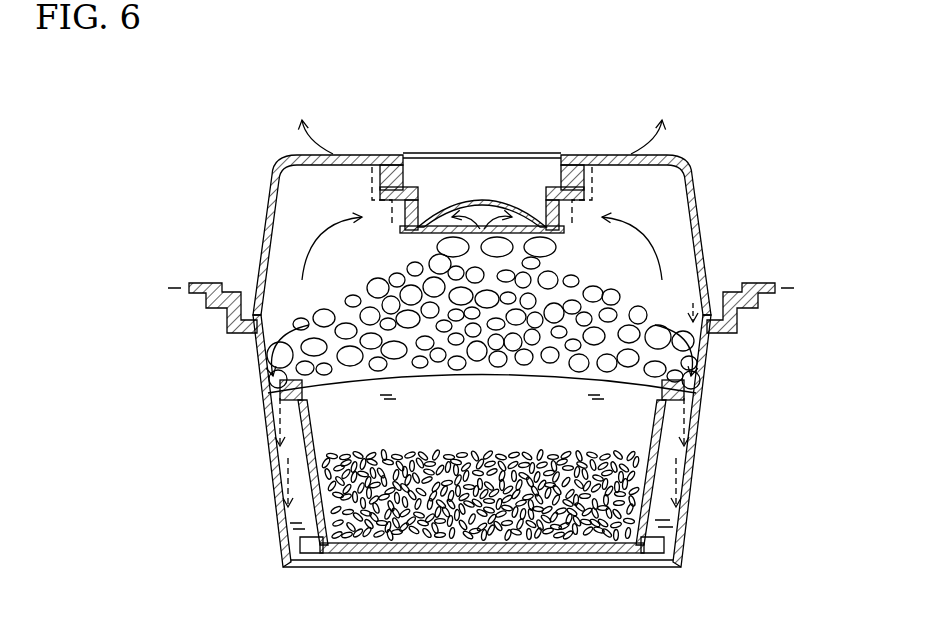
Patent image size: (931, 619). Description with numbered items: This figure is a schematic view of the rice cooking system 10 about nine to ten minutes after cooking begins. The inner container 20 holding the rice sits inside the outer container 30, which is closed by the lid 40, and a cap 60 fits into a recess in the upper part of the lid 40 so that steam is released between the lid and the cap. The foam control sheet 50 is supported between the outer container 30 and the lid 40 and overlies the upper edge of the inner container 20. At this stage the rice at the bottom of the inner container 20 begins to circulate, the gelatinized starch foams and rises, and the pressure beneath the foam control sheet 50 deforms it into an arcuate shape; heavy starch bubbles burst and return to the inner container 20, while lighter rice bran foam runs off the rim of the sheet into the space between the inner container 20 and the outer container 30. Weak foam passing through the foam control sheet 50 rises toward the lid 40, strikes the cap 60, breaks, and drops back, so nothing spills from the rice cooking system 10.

The rice cooking system 10 is at (501, 609).
The inner container 20 is at (680, 399).
The outer container 30 is at (703, 455).
The lid 40 is at (706, 232).
The foam control sheet 50 is at (708, 292).
The cap 60 is at (552, 146).